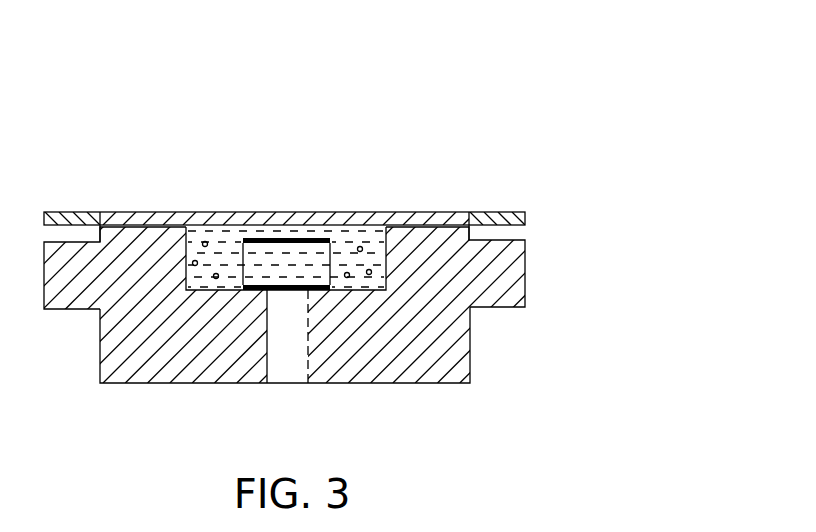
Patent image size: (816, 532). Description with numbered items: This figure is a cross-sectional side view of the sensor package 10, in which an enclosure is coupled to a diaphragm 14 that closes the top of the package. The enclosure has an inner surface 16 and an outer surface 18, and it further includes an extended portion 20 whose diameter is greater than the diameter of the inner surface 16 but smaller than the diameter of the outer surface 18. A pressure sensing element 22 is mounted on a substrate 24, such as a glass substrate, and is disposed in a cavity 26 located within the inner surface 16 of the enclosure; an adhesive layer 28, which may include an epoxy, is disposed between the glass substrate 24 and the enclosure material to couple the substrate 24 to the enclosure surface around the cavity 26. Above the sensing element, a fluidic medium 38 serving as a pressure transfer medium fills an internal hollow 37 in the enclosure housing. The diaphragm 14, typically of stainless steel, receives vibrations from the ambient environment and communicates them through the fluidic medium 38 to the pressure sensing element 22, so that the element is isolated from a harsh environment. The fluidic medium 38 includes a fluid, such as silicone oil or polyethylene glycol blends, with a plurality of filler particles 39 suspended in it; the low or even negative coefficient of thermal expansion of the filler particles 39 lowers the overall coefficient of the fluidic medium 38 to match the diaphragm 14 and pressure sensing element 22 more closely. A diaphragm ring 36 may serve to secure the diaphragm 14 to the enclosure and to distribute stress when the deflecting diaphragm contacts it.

The sensor package 10 is at (642, 54).
The diaphragm 14 is at (442, 212).
The inner surface 16 is at (470, 232).
The outer surface 18 is at (526, 268).
The extended portion 20 is at (471, 335).
The pressure sensing element 22 is at (305, 238).
The substrate 24 is at (243, 255).
The cavity 26 is at (265, 340).
The adhesive layer 28 is at (243, 288).
The diaphragm ring 36 is at (526, 216).
The internal hollow 37 is at (380, 265).
The fluidic medium 38 is at (340, 247).
The filler particles 39 is at (203, 242).